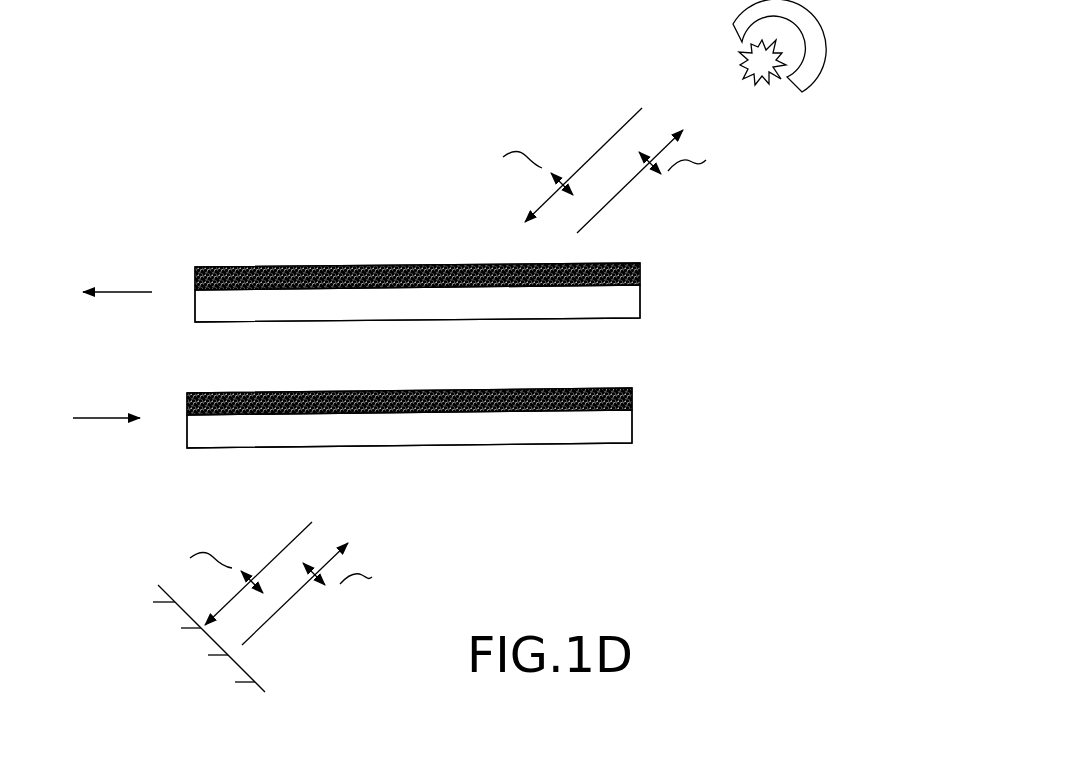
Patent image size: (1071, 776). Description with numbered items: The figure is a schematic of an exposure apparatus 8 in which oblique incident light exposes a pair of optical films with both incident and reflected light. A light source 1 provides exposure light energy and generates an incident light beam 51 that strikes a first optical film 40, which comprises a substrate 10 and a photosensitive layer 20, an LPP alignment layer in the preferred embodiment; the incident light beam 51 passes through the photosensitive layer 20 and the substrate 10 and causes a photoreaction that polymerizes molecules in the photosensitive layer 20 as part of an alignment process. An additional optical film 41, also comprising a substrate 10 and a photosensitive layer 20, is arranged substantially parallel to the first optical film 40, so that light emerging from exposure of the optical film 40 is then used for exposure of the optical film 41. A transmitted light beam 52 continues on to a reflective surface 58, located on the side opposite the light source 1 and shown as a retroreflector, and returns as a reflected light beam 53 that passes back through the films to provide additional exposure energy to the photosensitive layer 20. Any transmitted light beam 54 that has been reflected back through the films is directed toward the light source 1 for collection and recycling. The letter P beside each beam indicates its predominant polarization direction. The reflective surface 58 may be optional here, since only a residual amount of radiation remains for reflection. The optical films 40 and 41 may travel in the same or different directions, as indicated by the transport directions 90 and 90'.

The light source 1 is at (830, 72).
The exposure apparatus 8 is at (276, 164).
The substrate 10 is at (660, 300).
The photosensitive layer 20 is at (660, 271).
The optical film 40 is at (745, 228).
The additional optical film 41 is at (745, 342).
The incident light beam 51 is at (650, 103).
The transmitted light beam 52 is at (318, 520).
The reflected light beam 53 is at (352, 556).
The transmitted light beam 54 is at (698, 129).
The reflective surface 58 is at (262, 690).
The transport direction 90 is at (136, 271).
The transport direction 90' is at (128, 397).